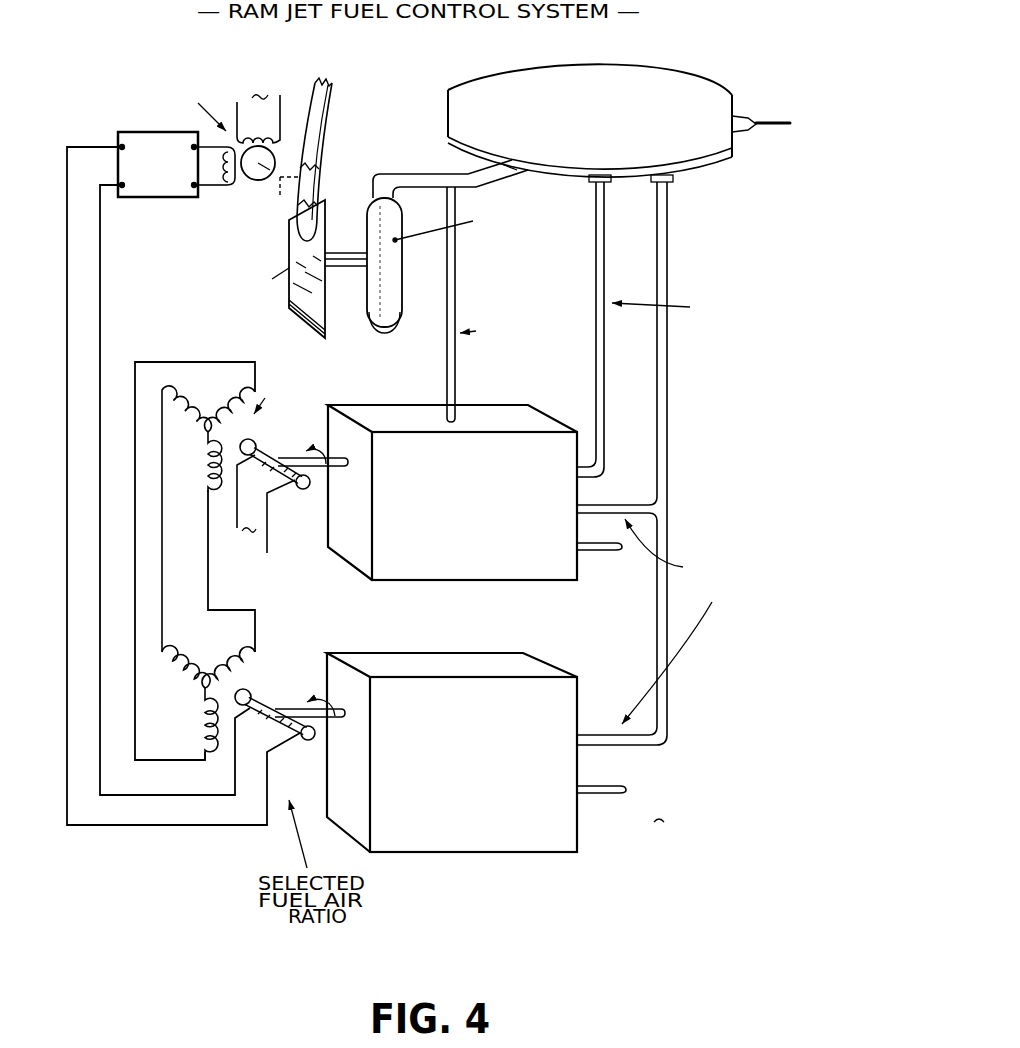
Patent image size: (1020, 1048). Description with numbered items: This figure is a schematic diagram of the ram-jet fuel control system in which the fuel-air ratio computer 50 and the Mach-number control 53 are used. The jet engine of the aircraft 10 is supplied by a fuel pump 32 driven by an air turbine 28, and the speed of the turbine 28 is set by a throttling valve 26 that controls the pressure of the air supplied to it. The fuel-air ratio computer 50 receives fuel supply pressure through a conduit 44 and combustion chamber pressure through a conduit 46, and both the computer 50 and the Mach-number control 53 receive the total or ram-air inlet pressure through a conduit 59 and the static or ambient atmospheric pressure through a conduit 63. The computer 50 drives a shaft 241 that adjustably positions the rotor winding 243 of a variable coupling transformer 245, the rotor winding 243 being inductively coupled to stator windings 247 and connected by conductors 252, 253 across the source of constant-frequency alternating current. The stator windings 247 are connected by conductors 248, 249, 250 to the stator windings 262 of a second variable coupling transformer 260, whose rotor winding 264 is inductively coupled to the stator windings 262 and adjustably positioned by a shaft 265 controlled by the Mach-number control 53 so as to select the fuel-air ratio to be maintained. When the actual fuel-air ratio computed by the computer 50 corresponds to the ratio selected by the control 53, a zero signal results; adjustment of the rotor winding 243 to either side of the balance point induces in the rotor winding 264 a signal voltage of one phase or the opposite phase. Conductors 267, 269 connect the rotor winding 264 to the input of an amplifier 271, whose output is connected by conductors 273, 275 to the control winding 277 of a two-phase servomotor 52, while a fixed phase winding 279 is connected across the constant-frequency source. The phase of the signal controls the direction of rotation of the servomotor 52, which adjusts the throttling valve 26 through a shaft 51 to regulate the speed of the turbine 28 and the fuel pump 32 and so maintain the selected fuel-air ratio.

The aircraft 10 is at (614, 62).
The throttling valve 26 is at (316, 190).
The turbine 28 is at (289, 243).
The fuel pump 32 is at (398, 295).
The conduit 44 is at (458, 274).
The conduit 46 is at (596, 270).
The fuel-air ratio computer 50 is at (476, 552).
The shaft 51 is at (289, 197).
The servomotor 52 is at (258, 184).
The Mach number control 53 is at (482, 832).
The conduit 59 is at (667, 374).
The conduit 63 is at (602, 551).
The shaft 241 is at (343, 467).
The rotor winding 243 is at (268, 460).
The variable coupling transformer 245 is at (257, 428).
The stator windings 247 is at (208, 432).
The conductor 248 is at (180, 362).
The conductor 249 is at (162, 500).
The conductor 250 is at (208, 582).
The conductor 252 is at (237, 518).
The conductor 253 is at (268, 503).
The variable coupling transformer 260 is at (251, 668).
The stator windings 262 is at (205, 688).
The rotor winding 264 is at (264, 700).
The shaft 265 is at (335, 718).
The conductor 267 is at (177, 797).
The conductor 269 is at (103, 826).
The amplifier 271 is at (172, 185).
The conductor 273 is at (218, 147).
The conductor 275 is at (208, 188).
The control winding 277 is at (222, 184).
The fixed phase winding 279 is at (258, 119).